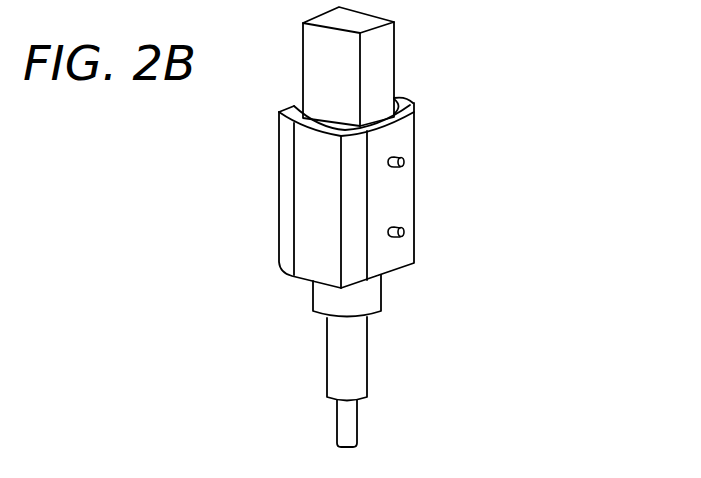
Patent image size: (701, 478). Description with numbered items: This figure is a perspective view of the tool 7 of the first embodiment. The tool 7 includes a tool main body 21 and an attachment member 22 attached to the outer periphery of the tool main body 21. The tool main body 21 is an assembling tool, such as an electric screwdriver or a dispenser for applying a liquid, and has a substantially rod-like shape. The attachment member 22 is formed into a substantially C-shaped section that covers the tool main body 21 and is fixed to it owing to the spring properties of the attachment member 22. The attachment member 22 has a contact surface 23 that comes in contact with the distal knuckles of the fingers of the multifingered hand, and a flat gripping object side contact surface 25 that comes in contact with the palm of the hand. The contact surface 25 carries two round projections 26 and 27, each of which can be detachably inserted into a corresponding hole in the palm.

The tool 7 is at (423, 270).
The tool main body 21 is at (387, 55).
The attachment member 22 is at (412, 103).
The contact surface 23 is at (280, 169).
The gripping object side contact surface 25 is at (397, 192).
The projection 26 is at (405, 158).
The projection 27 is at (405, 232).